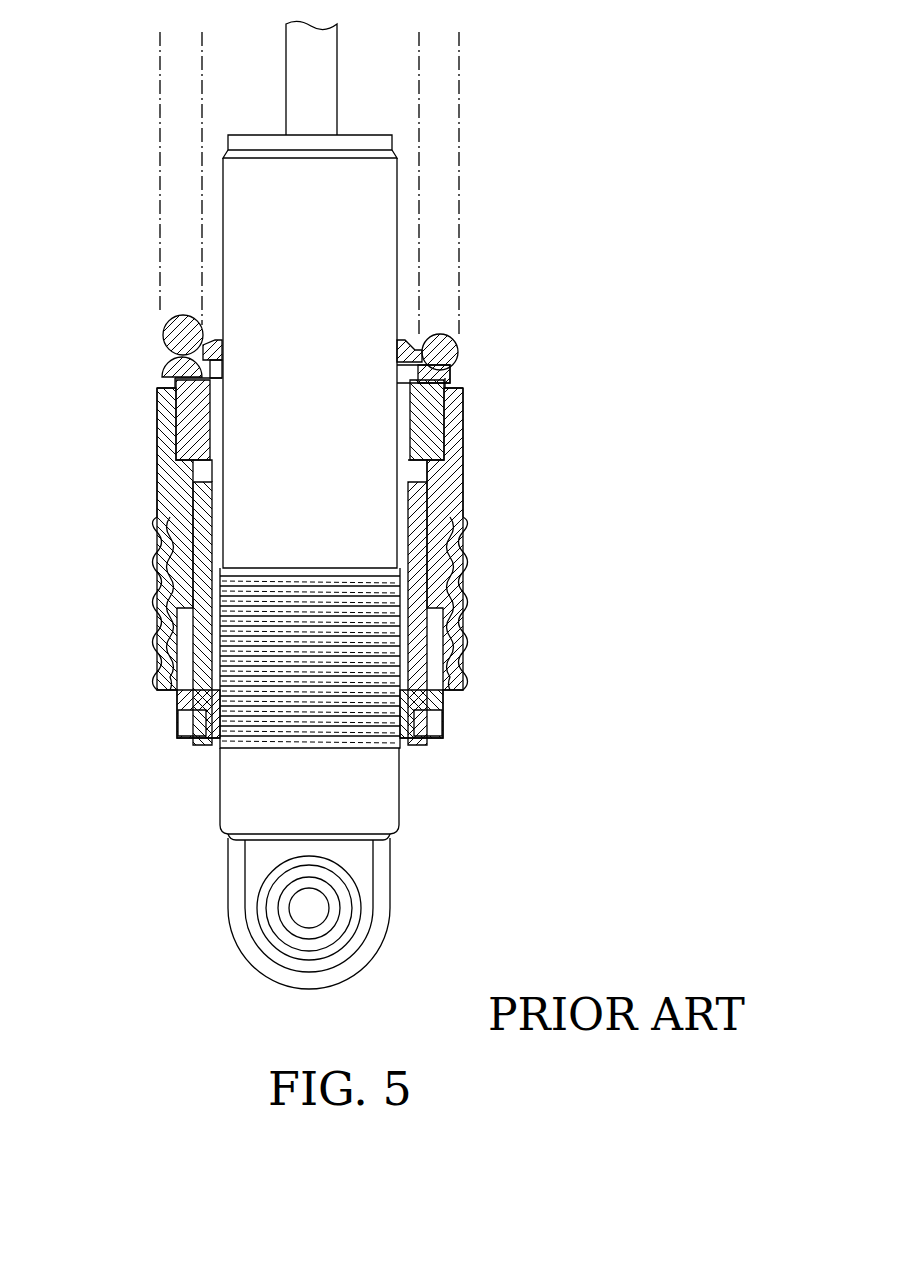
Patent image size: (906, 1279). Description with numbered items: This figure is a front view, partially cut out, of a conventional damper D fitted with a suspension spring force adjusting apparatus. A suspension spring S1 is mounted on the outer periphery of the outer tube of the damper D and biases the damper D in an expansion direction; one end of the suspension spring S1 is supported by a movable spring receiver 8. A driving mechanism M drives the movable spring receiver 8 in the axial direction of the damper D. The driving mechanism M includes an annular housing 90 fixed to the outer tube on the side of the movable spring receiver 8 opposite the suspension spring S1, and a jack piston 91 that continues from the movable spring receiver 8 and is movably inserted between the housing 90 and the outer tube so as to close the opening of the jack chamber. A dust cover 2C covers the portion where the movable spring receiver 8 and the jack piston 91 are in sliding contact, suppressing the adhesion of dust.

The damper D is at (222, 202).
The suspension spring S1 is at (162, 343).
The movable spring receiver 8 is at (458, 356).
The jack piston 91 is at (465, 408).
The housing 90 is at (460, 472).
The dust cover 2C is at (462, 593).
The driving mechanism M is at (174, 502).